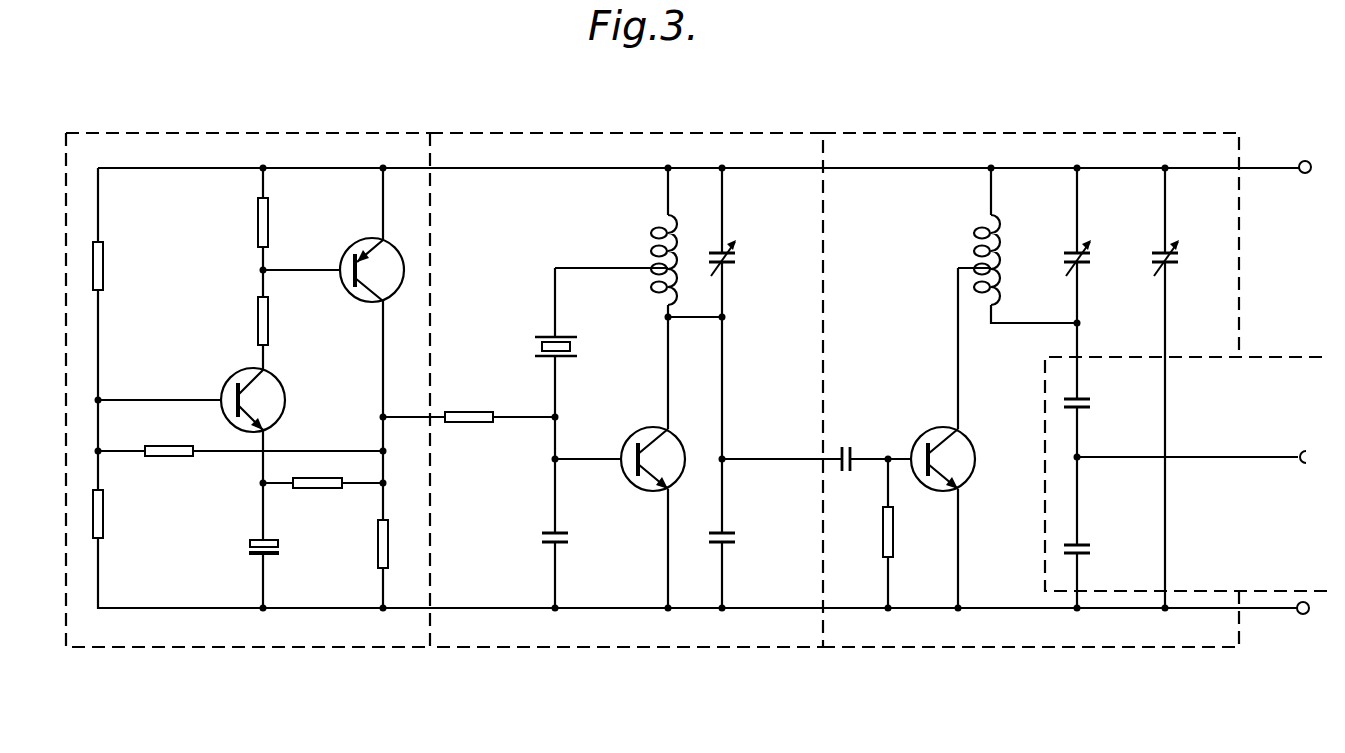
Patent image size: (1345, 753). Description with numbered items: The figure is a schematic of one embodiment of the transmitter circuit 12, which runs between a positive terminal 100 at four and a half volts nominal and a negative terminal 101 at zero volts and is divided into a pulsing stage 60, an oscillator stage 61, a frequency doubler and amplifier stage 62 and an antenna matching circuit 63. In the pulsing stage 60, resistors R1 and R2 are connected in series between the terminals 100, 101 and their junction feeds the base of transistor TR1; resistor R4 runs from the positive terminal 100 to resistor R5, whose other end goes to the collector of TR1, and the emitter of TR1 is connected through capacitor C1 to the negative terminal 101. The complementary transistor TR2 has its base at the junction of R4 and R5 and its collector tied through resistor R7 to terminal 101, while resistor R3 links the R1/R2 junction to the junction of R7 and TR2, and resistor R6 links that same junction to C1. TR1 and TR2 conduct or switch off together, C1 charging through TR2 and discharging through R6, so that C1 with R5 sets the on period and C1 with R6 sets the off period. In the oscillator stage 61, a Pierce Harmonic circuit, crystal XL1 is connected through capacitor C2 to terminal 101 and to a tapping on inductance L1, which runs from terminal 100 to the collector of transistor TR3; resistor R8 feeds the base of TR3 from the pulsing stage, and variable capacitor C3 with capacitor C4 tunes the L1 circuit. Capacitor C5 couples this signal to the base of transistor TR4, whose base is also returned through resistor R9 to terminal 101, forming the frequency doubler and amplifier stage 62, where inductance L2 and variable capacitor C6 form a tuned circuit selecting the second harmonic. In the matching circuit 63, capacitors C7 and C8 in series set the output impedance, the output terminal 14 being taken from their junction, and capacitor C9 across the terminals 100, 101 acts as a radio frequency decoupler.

The pulsing stage 60 is at (207, 133).
The transmitter circuit 12 is at (368, 124).
The oscillator stage 61 is at (658, 133).
The frequency doubler and amplifier stage 62 is at (1058, 133).
The antenna matching circuit 63 is at (1258, 357).
The positive terminal 100 is at (1303, 161).
The negative terminal 101 is at (1303, 614).
The output terminal 14 is at (1268, 457).
The resistor R1 is at (104, 252).
The resistor R2 is at (104, 502).
The resistor R3 is at (164, 446).
The resistor R4 is at (277, 200).
The resistor R5 is at (277, 300).
The resistor R6 is at (300, 489).
The resistor R7 is at (395, 524).
The resistor R8 is at (465, 412).
The resistor R9 is at (900, 510).
The capacitor C1 is at (279, 544).
The capacitor C2 is at (569, 534).
The variable capacitor C3 is at (747, 242).
The capacitor C4 is at (749, 530).
The capacitor C5 is at (856, 440).
The variable capacitor C6 is at (1120, 245).
The capacitor C7 is at (1103, 396).
The capacitor C8 is at (1100, 542).
The capacitor C9 is at (1188, 388).
The inductance L1 is at (678, 250).
The inductance L2 is at (1010, 255).
The crystal XL1 is at (570, 360).
The transistor TR1 is at (285, 399).
The transistor TR2 is at (403, 258).
The transistor TR3 is at (672, 432).
The transistor TR4 is at (966, 436).